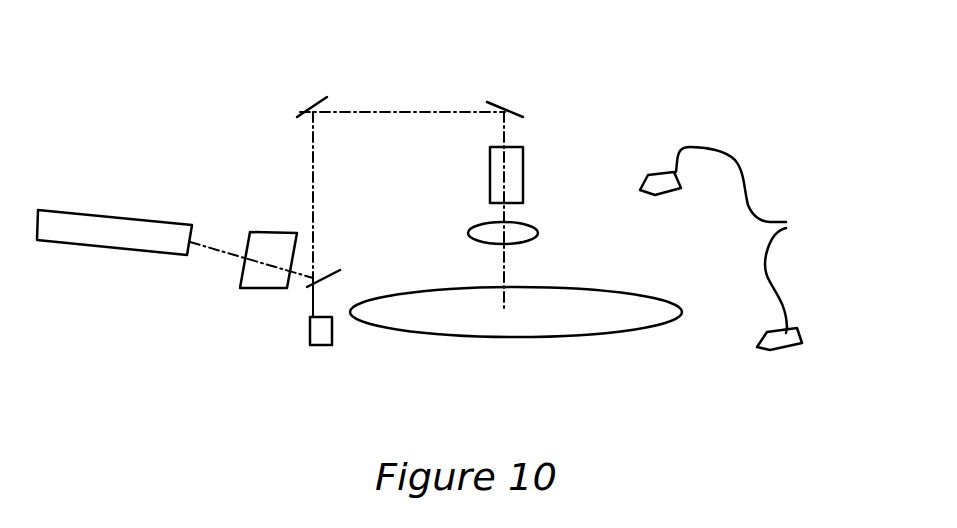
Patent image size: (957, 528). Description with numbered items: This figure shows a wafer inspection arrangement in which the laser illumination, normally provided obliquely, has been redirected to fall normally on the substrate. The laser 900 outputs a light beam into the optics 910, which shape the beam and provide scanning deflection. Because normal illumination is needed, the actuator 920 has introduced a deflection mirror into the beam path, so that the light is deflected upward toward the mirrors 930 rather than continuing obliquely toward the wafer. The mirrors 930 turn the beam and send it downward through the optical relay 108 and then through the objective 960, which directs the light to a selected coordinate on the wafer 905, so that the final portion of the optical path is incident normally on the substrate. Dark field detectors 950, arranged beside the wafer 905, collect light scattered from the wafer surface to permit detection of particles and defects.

The optical relay 108 is at (523, 155).
The laser 900 is at (112, 218).
The wafer 905 is at (627, 323).
The optics 910 is at (272, 235).
The actuator 920 is at (302, 332).
The mirrors 930 is at (495, 107).
The dark field detectors 950 is at (737, 248).
The objective 960 is at (530, 228).